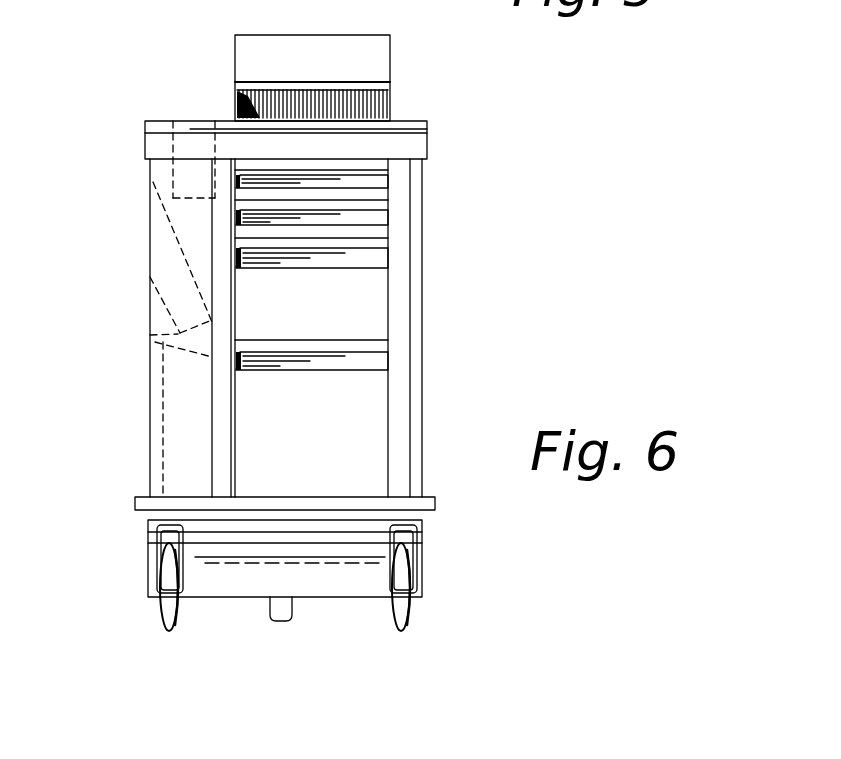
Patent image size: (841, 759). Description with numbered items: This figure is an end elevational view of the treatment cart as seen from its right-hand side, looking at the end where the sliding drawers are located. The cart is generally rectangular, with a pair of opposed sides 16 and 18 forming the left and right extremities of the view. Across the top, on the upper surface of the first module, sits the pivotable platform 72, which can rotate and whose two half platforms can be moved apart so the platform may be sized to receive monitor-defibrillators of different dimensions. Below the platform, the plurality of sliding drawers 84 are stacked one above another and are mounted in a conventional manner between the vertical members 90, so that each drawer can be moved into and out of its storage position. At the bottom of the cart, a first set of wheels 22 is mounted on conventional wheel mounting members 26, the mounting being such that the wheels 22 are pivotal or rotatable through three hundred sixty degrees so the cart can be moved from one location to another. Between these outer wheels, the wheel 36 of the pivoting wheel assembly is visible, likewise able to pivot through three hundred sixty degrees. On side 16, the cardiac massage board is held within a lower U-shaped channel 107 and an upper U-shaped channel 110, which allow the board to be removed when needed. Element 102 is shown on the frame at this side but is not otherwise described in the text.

The side 16 is at (427, 275).
The side 18 is at (143, 335).
The wheels 22 is at (158, 607).
The wheel mounting members 26 is at (156, 544).
The wheel 36 is at (273, 618).
The pivotable platform 72 is at (397, 84).
The sliding drawers 84 is at (378, 231).
The vertical members 90 is at (222, 432).
The rear post 102 is at (413, 375).
The lower U-shaped channel 107 is at (430, 488).
The upper U-shaped channel 110 is at (423, 172).